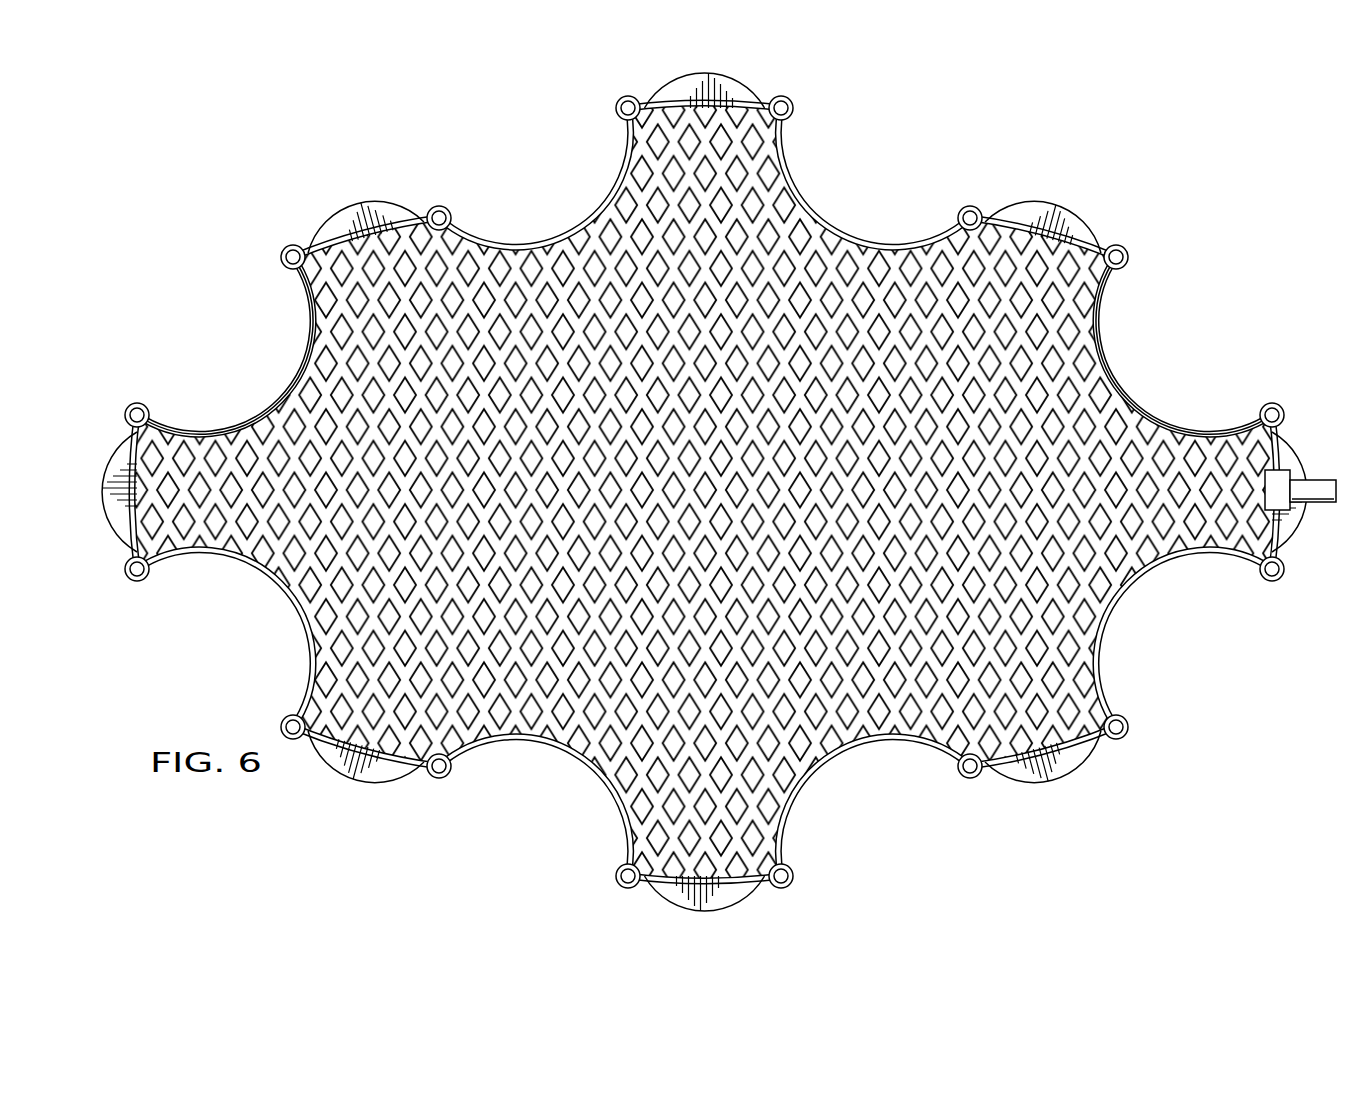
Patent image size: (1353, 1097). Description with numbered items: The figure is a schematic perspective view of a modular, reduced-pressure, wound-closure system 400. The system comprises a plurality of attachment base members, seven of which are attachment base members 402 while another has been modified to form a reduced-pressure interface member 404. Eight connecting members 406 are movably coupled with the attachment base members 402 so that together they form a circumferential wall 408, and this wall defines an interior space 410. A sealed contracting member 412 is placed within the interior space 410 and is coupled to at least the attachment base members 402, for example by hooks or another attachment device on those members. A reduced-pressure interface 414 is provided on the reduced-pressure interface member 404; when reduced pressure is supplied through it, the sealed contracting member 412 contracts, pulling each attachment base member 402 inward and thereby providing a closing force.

The modular, reduced-pressure, wound-closure system 400 is at (714, 491).
The attachment base member 402 is at (666, 95).
The reduced-pressure interface member 404 is at (1293, 455).
The connecting member 406 is at (567, 243).
The circumferential wall 408 is at (1120, 360).
The interior space 410 is at (318, 342).
The sealed contracting member 412 is at (727, 507).
The reduced-pressure interface 414 is at (1288, 518).